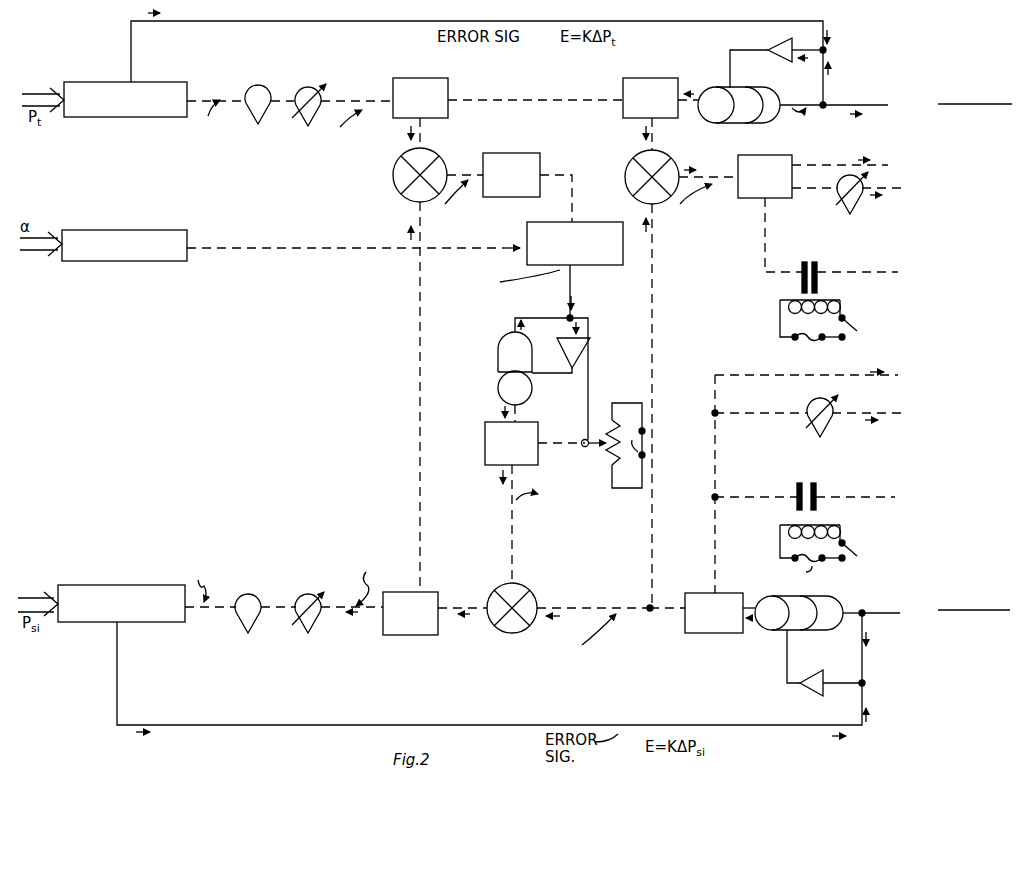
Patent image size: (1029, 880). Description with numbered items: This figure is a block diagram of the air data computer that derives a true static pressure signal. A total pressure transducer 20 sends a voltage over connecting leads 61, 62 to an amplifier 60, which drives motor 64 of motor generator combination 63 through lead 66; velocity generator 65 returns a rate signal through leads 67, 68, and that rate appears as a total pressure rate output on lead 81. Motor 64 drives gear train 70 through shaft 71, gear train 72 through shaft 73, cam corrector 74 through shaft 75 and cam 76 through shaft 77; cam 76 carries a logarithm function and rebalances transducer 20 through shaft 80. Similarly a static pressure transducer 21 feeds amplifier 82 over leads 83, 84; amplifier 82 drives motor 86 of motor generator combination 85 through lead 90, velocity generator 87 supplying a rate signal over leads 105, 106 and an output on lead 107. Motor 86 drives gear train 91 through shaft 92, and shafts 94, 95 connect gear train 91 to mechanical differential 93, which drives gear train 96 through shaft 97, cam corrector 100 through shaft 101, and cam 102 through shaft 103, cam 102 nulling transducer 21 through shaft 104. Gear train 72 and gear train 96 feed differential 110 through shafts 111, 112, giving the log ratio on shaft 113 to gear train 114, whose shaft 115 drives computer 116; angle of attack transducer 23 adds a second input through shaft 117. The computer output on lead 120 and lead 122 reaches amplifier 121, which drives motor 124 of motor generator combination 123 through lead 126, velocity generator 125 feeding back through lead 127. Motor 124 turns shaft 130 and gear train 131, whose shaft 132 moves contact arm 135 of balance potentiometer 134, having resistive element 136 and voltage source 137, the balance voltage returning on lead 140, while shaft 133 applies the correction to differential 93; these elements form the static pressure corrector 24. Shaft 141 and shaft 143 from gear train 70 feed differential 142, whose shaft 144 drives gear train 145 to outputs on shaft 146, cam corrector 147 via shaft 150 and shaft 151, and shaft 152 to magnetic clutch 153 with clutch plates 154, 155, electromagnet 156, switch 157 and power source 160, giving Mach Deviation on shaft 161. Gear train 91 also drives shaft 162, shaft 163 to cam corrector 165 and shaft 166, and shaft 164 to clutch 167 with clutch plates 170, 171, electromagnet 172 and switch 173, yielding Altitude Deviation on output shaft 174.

The total pressure transducer 20 is at (145, 82).
The static pressure transducer 21 is at (104, 585).
The angle of attack transducer 23 is at (115, 230).
The static pressure corrector 24 is at (538, 367).
The amplifier 60 is at (770, 40).
The connecting lead 61 is at (770, 21).
The connecting lead 62 is at (808, 36).
The motor generator combination 63 is at (751, 115).
The motor 64 is at (712, 123).
The velocity generator 65 is at (778, 118).
The connecting lead 66 is at (740, 44).
The connecting lead 67 is at (806, 112).
The connecting lead 68 is at (828, 96).
The gear train 70 is at (650, 78).
The shaft 71 is at (688, 108).
The gear train 72 is at (420, 78).
The shaft 73 is at (525, 99).
The cam corrector 74 is at (312, 122).
The connecting shaft 75 is at (350, 100).
The cam 76 is at (264, 120).
The connecting shaft 77 is at (278, 95).
The connecting shaft 80 is at (200, 100).
The connecting lead 81 is at (852, 104).
The amplifier 82 is at (810, 696).
The connecting lead 83 is at (806, 718).
The connecting lead 84 is at (840, 682).
The motor generator combination 85 is at (803, 626).
The motor 86 is at (768, 630).
The velocity generator 87 is at (840, 626).
The connecting lead 90 is at (787, 668).
The gear train 91 is at (722, 633).
The connecting shaft 92 is at (748, 604).
The mechanical differential 93 is at (528, 592).
The shaft 94 is at (656, 607).
The shaft 95 is at (590, 607).
The gear train 96 is at (425, 635).
The connecting shaft 97 is at (474, 598).
The cam corrector 100 is at (320, 596).
The connecting shaft 101 is at (378, 612).
The cam 102 is at (258, 600).
The connecting shaft 103 is at (278, 612).
The connecting shaft 104 is at (208, 612).
The connecting lead 105 is at (850, 610).
The connecting lead 106 is at (862, 664).
The connecting lead 107 is at (888, 612).
The differential 110 is at (394, 182).
The connecting shaft 111 is at (425, 142).
The connecting shaft 112 is at (416, 385).
The shaft 113 is at (458, 174).
The gear train 114 is at (515, 153).
The shaft 115 is at (574, 200).
The computer 116 is at (612, 220).
The shaft 117 is at (340, 252).
The output lead 120 is at (566, 282).
The amplifier 121 is at (560, 362).
The connecting lead 122 is at (570, 322).
The motor generator combination 123 is at (489, 368).
The motor 124 is at (498, 390).
The velocity generator 125 is at (498, 346).
The connecting lead 126 is at (548, 374).
The connecting lead 127 is at (540, 312).
The shaft 130 is at (518, 418).
The gear train 131 is at (485, 445).
The shaft 132 is at (550, 442).
The shaft 133 is at (514, 488).
The balance potentiometer 134 is at (613, 441).
The movable contact arm 135 is at (600, 418).
The resistive element 136 is at (632, 419).
The voltage source 137 is at (631, 460).
The connecting lead 140 is at (590, 380).
The shaft 141 is at (654, 340).
The differential 142 is at (630, 165).
The shaft 143 is at (666, 130).
The shaft 144 is at (715, 176).
The gear train 145 is at (765, 155).
The shaft 146 is at (812, 164).
The cam corrector 147 is at (858, 208).
The connecting shaft 150 is at (800, 187).
The shaft 151 is at (890, 180).
The shaft 152 is at (770, 250).
The magnetic clutch 153 is at (821, 303).
The clutch plate 154 is at (787, 276).
The clutch plate 155 is at (820, 270).
The electromagnet 156 is at (846, 306).
The switch 157 is at (852, 330).
The power source 160 is at (812, 345).
The shaft 161 is at (896, 264).
The shaft 162 is at (714, 408).
The shaft 163 is at (748, 412).
The shaft 164 is at (740, 496).
The cam corrector 165 is at (834, 412).
The shaft 166 is at (888, 412).
The clutch 167 is at (816, 525).
The clutch plate 170 is at (796, 492).
The clutch plate 171 is at (816, 492).
The electromagnet 172 is at (844, 530).
The switch 173 is at (862, 550).
The output shaft 174 is at (864, 488).